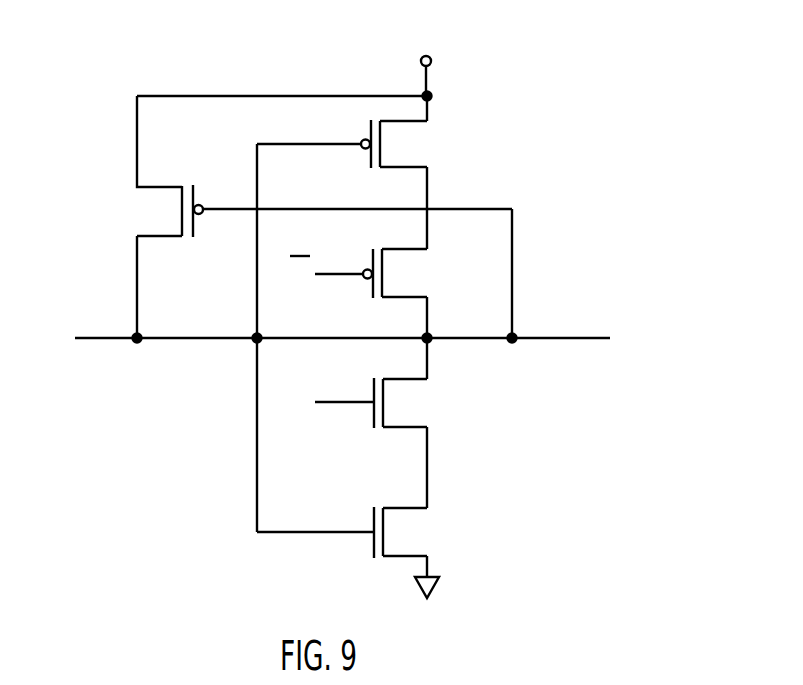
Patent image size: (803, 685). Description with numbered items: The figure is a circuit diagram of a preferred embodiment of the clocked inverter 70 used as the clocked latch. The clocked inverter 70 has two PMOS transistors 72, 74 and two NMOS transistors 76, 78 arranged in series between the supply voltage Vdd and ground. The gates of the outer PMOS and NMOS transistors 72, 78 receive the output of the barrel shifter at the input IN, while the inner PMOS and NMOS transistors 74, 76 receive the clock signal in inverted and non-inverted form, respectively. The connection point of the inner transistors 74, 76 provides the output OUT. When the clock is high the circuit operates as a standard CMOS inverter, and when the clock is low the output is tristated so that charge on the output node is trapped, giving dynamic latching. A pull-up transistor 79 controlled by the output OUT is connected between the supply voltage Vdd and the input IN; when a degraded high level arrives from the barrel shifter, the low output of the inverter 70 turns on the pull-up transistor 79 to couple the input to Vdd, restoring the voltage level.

The clocked inverter 70 is at (358, 309).
The outer PMOS transistor 72 is at (386, 121).
The inner PMOS transistor 74 is at (388, 249).
The inner NMOS transistor 76 is at (388, 378).
The outer NMOS transistor 78 is at (388, 507).
The pull-up transistor 79 is at (160, 211).